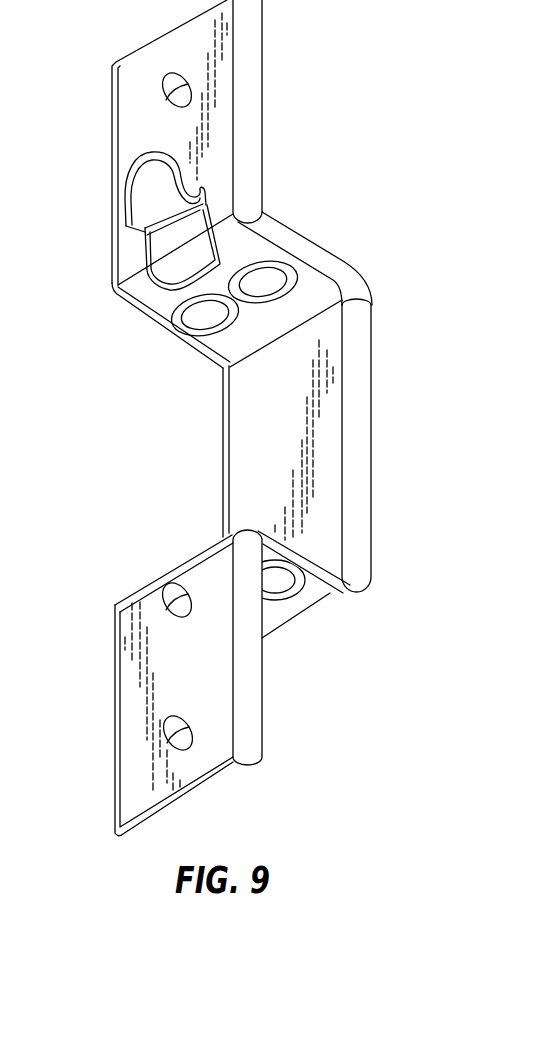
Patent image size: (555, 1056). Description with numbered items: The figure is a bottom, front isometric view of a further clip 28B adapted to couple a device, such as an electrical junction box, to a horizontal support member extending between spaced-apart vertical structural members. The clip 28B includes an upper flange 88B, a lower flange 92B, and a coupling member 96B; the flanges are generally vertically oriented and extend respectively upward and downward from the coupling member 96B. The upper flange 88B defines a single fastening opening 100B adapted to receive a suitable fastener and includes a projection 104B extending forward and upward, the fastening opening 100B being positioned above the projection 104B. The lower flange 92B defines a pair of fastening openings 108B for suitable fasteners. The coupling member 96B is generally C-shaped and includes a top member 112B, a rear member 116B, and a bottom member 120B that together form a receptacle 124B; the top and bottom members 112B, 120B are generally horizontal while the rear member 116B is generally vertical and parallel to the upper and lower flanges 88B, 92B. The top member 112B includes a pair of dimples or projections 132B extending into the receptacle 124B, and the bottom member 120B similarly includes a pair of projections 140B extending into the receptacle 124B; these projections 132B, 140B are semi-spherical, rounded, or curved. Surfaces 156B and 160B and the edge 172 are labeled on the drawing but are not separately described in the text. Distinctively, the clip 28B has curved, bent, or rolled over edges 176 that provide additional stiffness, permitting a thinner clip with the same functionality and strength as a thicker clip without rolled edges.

The clip 28B is at (396, 141).
The upper flange 88B is at (106, 125).
The lower flange 92B is at (268, 696).
The coupling member 96B is at (378, 343).
The fastening opening 100B is at (190, 88).
The projection 104B is at (143, 186).
The fastening openings 108B is at (177, 601).
The top member 112B is at (247, 257).
The rear member 116B is at (327, 427).
The bottom member 120B is at (320, 597).
The receptacle 124B is at (173, 438).
The projections 132B is at (285, 281).
The projections 140B is at (270, 578).
The upper plate face 156B is at (213, 138).
The lower plate face 160B is at (141, 700).
The rolled edge 172 is at (352, 473).
The rolled over edges 176 is at (245, 95).